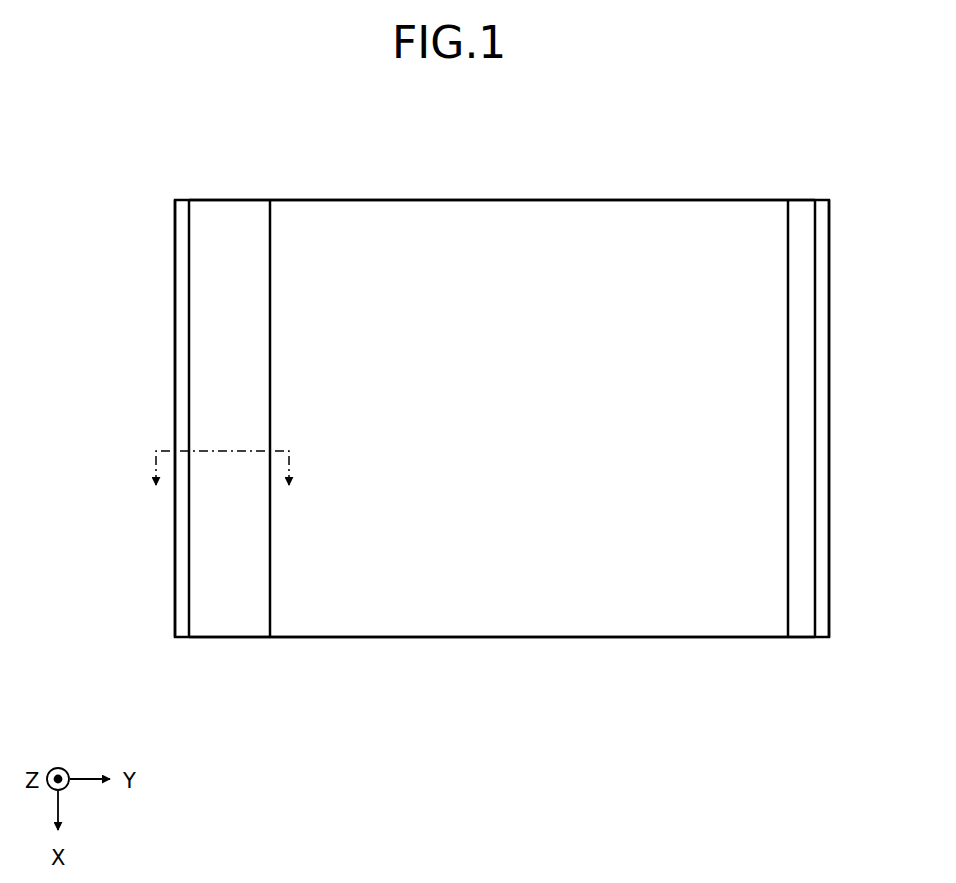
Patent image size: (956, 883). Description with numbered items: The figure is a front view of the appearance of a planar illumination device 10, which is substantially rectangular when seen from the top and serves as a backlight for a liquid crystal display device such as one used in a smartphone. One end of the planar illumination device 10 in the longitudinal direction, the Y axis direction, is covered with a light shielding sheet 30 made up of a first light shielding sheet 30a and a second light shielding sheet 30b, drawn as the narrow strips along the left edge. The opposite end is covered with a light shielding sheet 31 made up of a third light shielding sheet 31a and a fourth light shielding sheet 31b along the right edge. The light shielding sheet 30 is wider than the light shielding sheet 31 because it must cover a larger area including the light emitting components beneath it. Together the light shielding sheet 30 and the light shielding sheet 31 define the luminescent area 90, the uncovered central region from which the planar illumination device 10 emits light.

The planar illumination device 10 is at (505, 428).
The luminescent area 90 is at (527, 279).
The light shielding sheet 30 is at (203, 471).
The first light shielding sheet 30a is at (183, 623).
The second light shielding sheet 30b is at (229, 445).
The light shielding sheet 31 is at (812, 471).
The third light shielding sheet 31a is at (841, 445).
The fourth light shielding sheet 31b is at (802, 623).